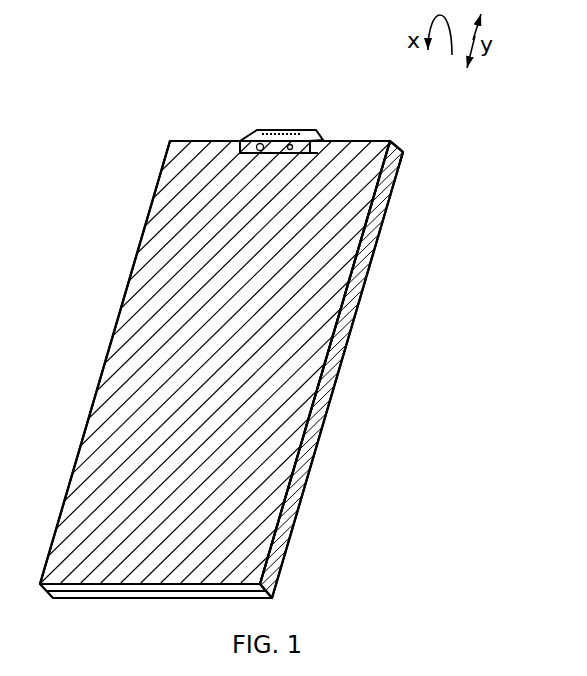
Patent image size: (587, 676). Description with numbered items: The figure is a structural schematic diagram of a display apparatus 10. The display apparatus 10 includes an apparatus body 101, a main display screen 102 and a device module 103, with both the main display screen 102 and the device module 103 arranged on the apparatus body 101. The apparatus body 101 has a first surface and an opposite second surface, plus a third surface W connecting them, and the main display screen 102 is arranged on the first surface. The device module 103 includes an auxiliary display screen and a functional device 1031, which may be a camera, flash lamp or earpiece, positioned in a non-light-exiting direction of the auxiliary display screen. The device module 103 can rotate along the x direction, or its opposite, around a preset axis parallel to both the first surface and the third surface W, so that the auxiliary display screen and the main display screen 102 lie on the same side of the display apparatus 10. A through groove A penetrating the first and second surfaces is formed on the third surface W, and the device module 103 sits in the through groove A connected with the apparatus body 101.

The display apparatus 10 is at (150, 37).
The apparatus body 101 is at (373, 221).
The main display screen 102 is at (292, 359).
The device module 103 is at (307, 129).
The functional device 1031 is at (254, 142).
The third surface W is at (395, 147).
The through groove A is at (307, 158).